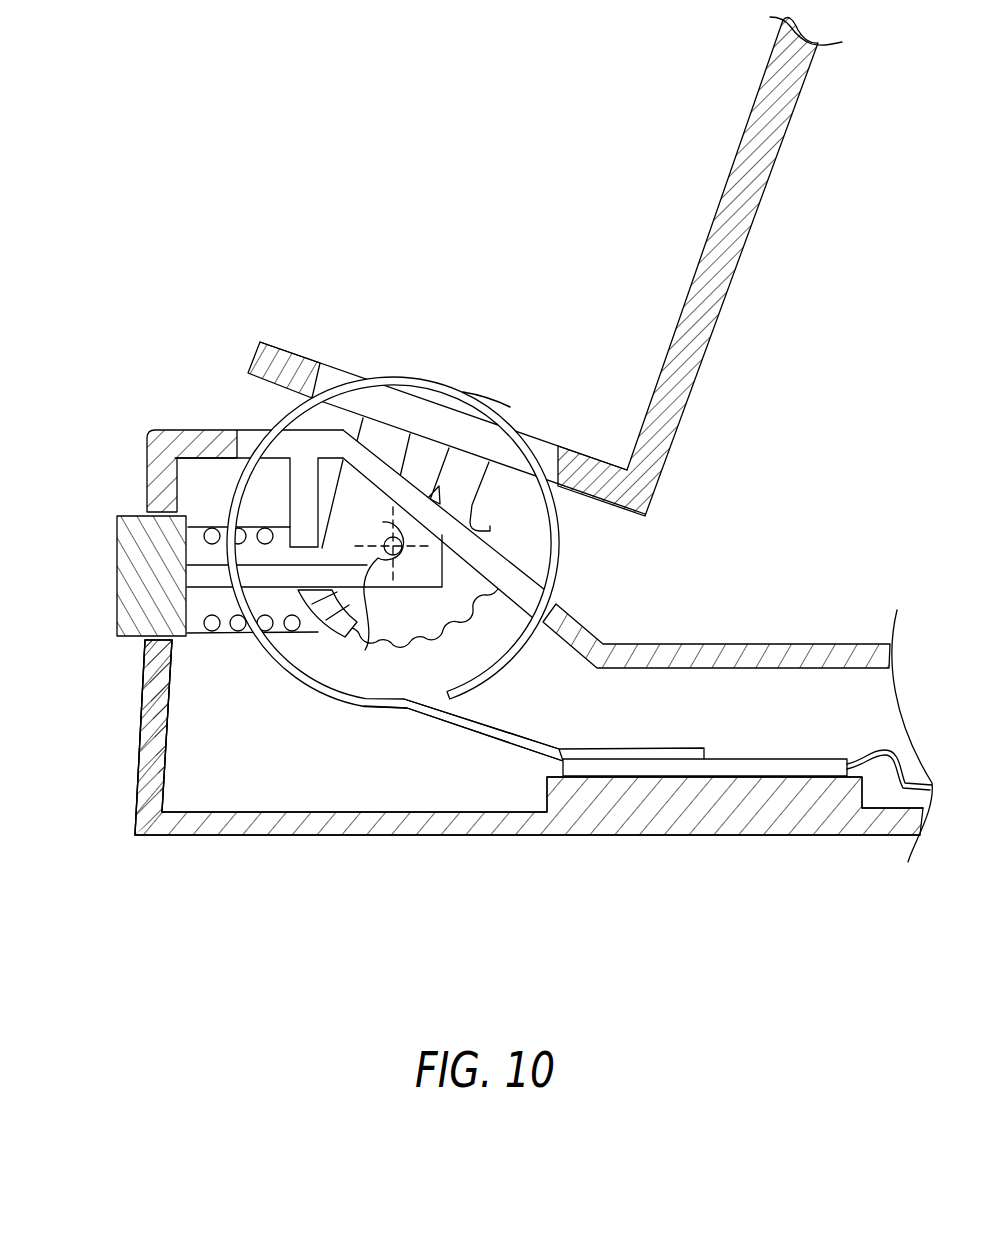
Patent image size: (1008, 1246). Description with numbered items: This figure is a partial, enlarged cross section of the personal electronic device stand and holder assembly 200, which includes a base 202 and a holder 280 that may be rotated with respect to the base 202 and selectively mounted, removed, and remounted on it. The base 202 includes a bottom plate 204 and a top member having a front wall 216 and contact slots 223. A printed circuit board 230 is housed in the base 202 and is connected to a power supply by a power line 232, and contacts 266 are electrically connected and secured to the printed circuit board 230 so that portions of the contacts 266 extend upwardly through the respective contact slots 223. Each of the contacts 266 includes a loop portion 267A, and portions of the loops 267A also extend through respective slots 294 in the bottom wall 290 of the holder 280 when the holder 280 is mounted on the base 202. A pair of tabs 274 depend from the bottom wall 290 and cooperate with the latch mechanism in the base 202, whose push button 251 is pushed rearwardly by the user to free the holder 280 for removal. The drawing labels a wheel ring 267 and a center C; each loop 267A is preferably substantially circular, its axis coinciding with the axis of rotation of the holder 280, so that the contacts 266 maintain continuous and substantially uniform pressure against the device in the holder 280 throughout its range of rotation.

The assembly 200 is at (487, 530).
The base 202 is at (487, 736).
The bottom plate 204 is at (628, 836).
The front wall 216 is at (150, 772).
The contact slots 223 is at (557, 613).
The printed circuit board 230 is at (737, 763).
The power line 232 is at (868, 756).
The push button 251 is at (133, 598).
The contacts 266 is at (445, 722).
The wheel ring 267 is at (556, 546).
The loop portion 267A is at (463, 402).
The tabs 274 is at (422, 603).
The holder 280 is at (738, 217).
The bottom wall 290 is at (296, 372).
The slots 294 is at (336, 377).
The center C is at (365, 650).